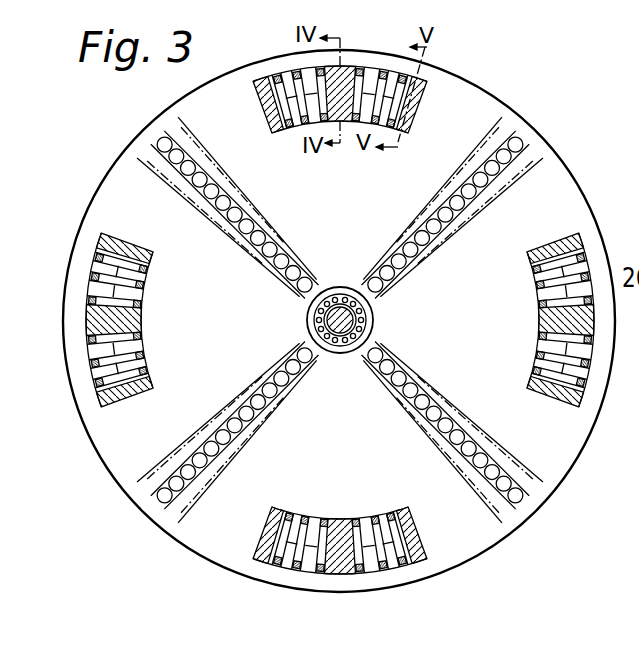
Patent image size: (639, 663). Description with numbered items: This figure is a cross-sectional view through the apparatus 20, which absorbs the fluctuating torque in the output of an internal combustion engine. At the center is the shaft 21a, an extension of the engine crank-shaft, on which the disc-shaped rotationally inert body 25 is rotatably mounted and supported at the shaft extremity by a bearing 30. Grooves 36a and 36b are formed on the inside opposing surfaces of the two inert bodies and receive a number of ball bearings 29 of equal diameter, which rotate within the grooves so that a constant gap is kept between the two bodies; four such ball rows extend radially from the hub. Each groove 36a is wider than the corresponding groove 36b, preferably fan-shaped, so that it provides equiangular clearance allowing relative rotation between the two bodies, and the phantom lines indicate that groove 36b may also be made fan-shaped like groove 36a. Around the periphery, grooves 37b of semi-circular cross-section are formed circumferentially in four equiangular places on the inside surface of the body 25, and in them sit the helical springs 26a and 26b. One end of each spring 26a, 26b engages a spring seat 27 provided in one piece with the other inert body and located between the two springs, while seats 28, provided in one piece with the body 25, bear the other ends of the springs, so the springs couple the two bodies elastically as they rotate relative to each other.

The apparatus 20 is at (346, 321).
The shaft 21a is at (301, 325).
The rotationally inert body 25 is at (346, 321).
The helical spring 26a is at (433, 105).
The helical spring 26b is at (261, 79).
The spring seat 27 is at (316, 320).
The seat 28 is at (340, 519).
The ball bearing 29 is at (340, 320).
The bearing 30 is at (311, 343).
The groove 36a is at (344, 320).
The groove 36b is at (372, 320).
The groove 37b is at (386, 69).